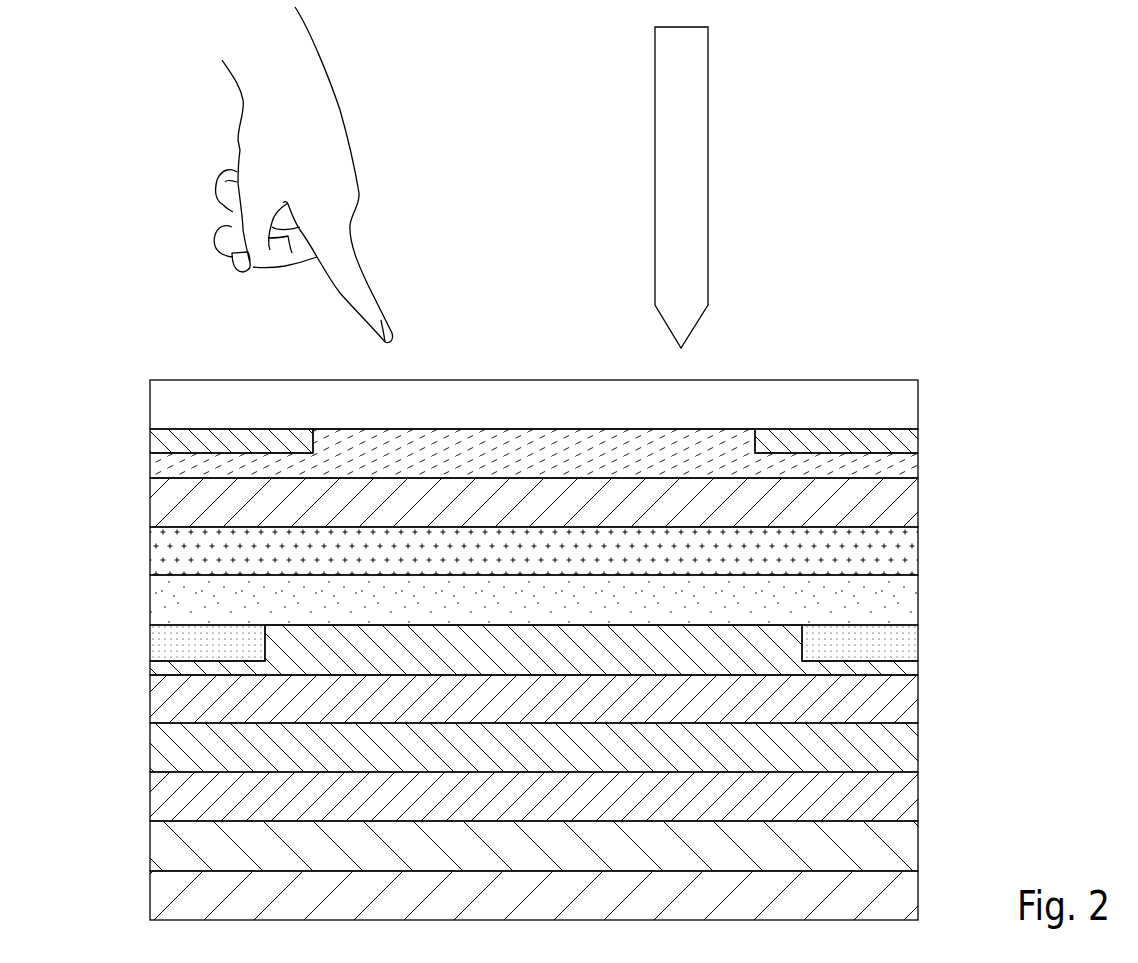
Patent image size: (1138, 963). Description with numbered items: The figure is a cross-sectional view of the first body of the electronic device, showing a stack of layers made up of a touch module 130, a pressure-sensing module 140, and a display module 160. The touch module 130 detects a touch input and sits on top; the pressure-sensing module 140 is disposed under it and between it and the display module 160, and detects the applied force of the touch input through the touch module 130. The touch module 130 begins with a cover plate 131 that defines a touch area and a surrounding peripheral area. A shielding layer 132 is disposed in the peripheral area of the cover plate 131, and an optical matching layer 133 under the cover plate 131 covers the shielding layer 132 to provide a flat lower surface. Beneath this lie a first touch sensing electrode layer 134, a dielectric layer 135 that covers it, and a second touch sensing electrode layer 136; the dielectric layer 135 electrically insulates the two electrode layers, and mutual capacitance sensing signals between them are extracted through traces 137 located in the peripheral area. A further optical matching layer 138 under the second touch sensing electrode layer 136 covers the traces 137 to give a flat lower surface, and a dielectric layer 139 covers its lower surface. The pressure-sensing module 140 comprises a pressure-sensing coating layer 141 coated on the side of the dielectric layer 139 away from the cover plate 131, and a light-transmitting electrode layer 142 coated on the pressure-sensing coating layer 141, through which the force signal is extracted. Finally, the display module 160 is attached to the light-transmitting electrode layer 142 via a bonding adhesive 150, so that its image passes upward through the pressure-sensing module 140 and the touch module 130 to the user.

The touch module 130 is at (120, 380).
The cover plate 131 is at (903, 407).
The shielding layer 132 is at (903, 444).
The optical matching layer 133 is at (903, 470).
The first touch sensing electrode layer 134 is at (903, 510).
The dielectric layer 135 is at (903, 557).
The second touch sensing electrode layer 136 is at (903, 605).
The traces 137 is at (903, 640).
The optical matching layer 138 is at (903, 669).
The dielectric layer 139 is at (903, 704).
The pressure-sensing module 140 is at (120, 724).
The pressure-sensing coating layer 141 is at (903, 749).
The light-transmitting electrode layer 142 is at (903, 797).
The bonding adhesive 150 is at (172, 844).
The display module 160 is at (172, 900).